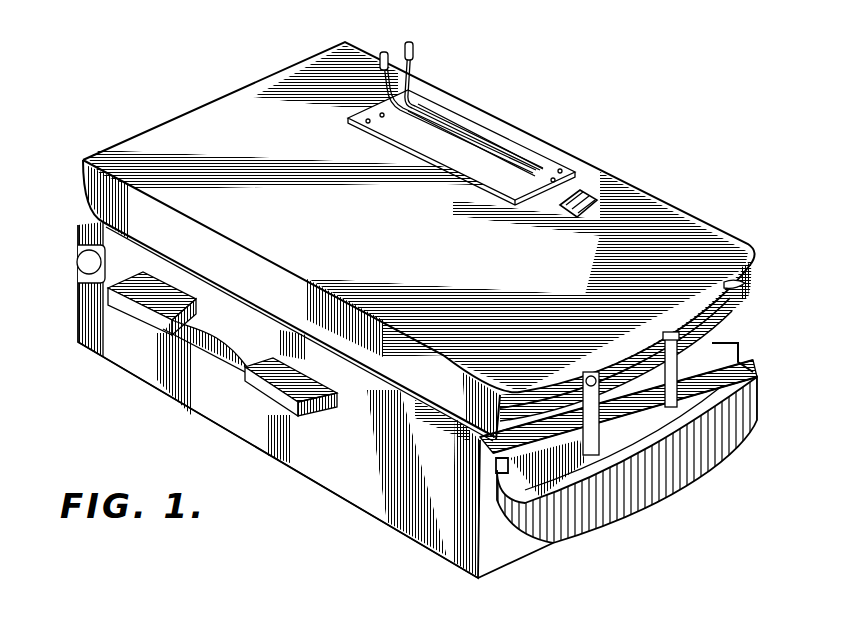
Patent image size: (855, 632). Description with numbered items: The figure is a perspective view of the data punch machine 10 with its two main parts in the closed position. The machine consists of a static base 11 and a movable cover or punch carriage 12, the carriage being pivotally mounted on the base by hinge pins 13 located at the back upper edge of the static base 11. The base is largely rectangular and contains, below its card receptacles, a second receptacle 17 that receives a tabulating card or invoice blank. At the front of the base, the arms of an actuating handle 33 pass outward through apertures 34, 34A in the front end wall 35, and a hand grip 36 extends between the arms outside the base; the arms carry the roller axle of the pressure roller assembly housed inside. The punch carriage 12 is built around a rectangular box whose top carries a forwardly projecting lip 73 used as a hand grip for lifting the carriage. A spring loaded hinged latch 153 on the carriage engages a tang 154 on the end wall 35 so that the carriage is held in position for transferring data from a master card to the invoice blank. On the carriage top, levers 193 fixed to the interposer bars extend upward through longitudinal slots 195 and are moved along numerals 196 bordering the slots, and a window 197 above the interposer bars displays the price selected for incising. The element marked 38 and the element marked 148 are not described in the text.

The data punch machine 10 is at (672, 202).
The static base 11 is at (325, 464).
The punch carriage 12 is at (243, 107).
The hinge pins 13 is at (85, 262).
The second receptacle 17 is at (145, 300).
The actuating handle 33 is at (672, 476).
The aperture 34 is at (496, 464).
The aperture 34A is at (720, 344).
The front end wall 35 is at (513, 545).
The hand grip 36 is at (657, 492).
The front wall 38 is at (368, 487).
The forwardly projecting lip 73 is at (732, 284).
The counter 148 is at (560, 218).
The spring loaded hinged latch 153 is at (700, 405).
The tang 154 is at (635, 407).
The levers 193 is at (383, 57).
The longitudinal slots 195 is at (473, 137).
The numerals 196 is at (428, 100).
The window 197 is at (600, 200).